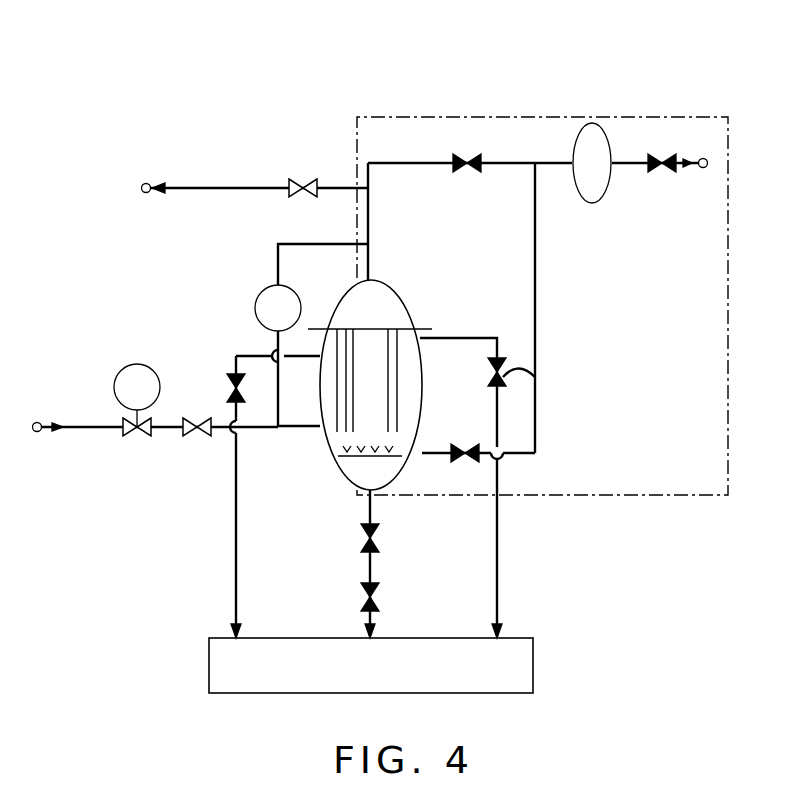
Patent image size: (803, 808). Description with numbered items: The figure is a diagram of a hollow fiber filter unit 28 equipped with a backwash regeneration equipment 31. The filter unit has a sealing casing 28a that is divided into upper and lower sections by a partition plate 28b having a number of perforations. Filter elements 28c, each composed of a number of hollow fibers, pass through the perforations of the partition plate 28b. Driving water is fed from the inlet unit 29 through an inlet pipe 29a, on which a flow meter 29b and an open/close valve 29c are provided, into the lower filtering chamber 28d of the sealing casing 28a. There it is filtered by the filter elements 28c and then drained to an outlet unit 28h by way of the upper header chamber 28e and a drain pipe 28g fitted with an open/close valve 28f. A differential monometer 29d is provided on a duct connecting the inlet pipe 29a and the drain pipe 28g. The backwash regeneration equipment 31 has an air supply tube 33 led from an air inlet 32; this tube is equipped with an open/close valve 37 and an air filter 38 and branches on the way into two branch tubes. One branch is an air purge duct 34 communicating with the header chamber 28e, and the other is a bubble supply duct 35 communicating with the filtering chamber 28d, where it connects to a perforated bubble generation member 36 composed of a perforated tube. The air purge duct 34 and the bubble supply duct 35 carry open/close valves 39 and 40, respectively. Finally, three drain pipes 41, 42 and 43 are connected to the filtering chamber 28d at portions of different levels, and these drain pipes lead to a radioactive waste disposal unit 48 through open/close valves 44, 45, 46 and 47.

The hollow fiber filter unit 28 is at (408, 290).
The sealing casing 28a is at (345, 296).
The partition plate 28b is at (422, 327).
The filter elements 28c is at (398, 400).
The lower filtering chamber 28d is at (328, 440).
The upper header chamber 28e is at (400, 305).
The open/close valve 28f is at (305, 178).
The drain pipe 28g is at (370, 213).
The outlet unit 28h is at (148, 183).
The inlet unit 29 is at (37, 433).
The inlet pipe 29a is at (92, 425).
The flow meter 29b is at (128, 437).
The open/close valve 29c is at (190, 437).
The differential monometer 29d is at (266, 296).
The backwash regeneration equipment 31 is at (420, 115).
The air inlet 32 is at (703, 157).
The air supply tube 33 is at (557, 168).
The air purge duct 34 is at (505, 168).
The bubble supply duct 35 is at (535, 425).
The perforated bubble generation member 36 is at (366, 458).
The open/close valve 37 is at (652, 168).
The air filter 38 is at (592, 122).
The open/close valve 39 is at (469, 156).
The open/close valve 40 is at (470, 460).
The drain pipe 41 is at (236, 565).
The drain pipe 42 is at (368, 565).
The drain pipe 43 is at (497, 565).
The open/close valve 44 is at (232, 378).
The open/close valve 45 is at (376, 538).
The open/close valve 46 is at (376, 597).
The open/close valve 47 is at (502, 372).
The radioactive waste disposal unit 48 is at (533, 655).